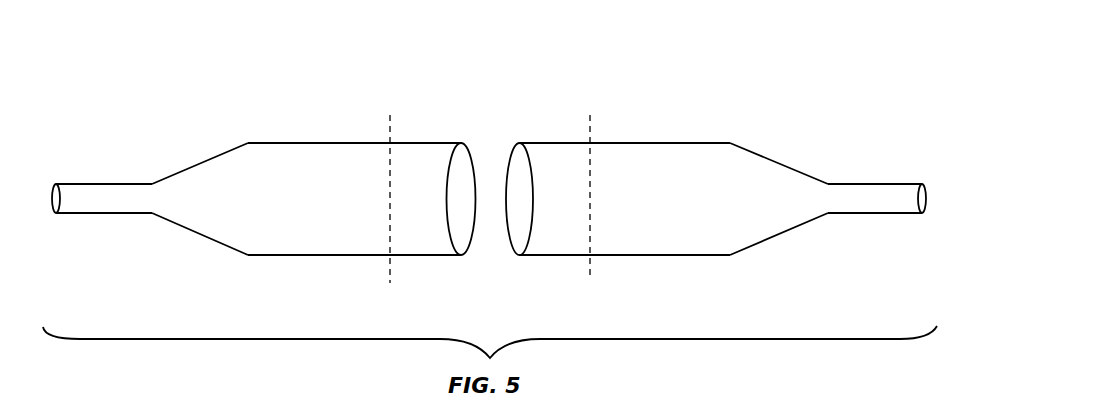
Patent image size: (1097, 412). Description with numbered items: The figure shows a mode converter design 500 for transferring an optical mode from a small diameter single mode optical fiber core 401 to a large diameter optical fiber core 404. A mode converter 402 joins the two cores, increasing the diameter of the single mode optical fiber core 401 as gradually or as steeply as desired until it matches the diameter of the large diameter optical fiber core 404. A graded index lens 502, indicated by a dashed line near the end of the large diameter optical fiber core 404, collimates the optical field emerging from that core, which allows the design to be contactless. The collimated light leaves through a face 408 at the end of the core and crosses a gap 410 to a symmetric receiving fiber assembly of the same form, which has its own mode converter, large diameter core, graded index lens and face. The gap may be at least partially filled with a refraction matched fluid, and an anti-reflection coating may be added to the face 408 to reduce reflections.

The mode converter design 500 is at (834, 70).
The small diameter single mode optical fiber core 401 is at (103, 215).
The mode converter 402 is at (233, 148).
The large diameter optical fiber core 404 is at (312, 142).
The graded index lens 502 is at (423, 142).
The face 408 is at (455, 227).
The gap 410 is at (490, 160).